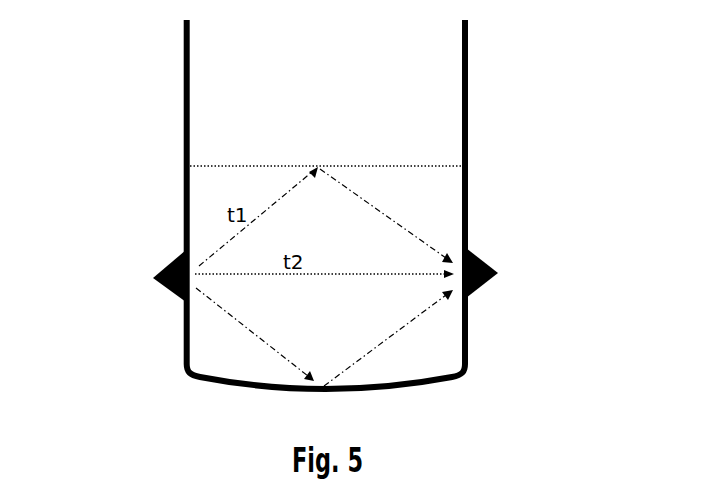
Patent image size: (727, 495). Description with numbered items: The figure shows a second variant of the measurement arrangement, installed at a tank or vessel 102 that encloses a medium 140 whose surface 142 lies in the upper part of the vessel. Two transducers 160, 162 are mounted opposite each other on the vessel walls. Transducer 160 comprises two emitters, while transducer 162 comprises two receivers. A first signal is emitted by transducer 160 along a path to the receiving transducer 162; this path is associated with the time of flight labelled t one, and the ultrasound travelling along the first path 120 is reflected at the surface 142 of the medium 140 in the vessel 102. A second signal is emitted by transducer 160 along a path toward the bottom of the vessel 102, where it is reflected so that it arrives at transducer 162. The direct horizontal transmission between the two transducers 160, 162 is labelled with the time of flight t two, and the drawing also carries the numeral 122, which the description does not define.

The vessel 102 is at (466, 108).
The first path 120 is at (292, 185).
The direct transmission path 122 is at (389, 275).
The medium 140 is at (352, 173).
The surface 142 is at (220, 163).
The transducer 160 is at (184, 298).
The transducer 162 is at (487, 285).